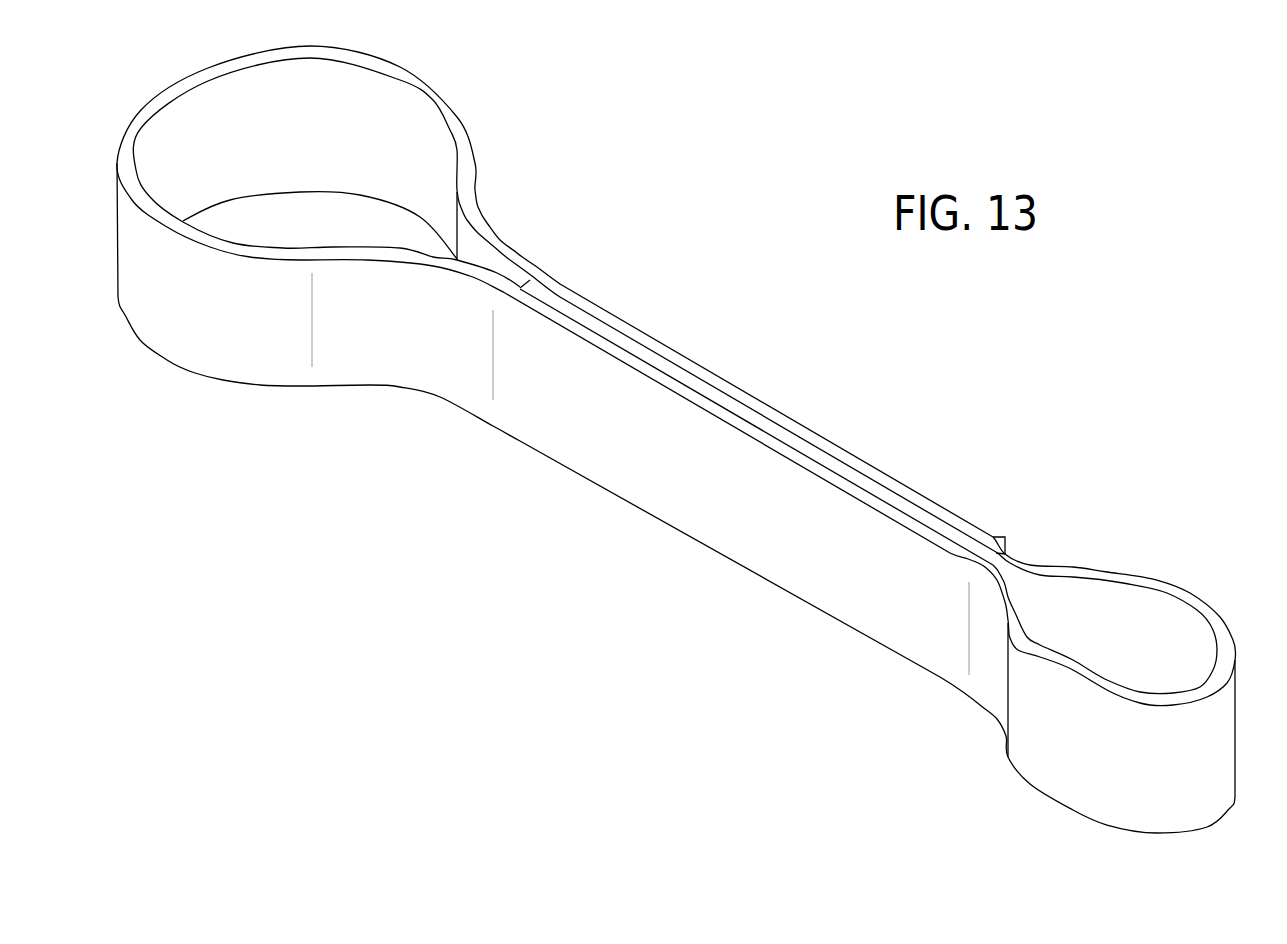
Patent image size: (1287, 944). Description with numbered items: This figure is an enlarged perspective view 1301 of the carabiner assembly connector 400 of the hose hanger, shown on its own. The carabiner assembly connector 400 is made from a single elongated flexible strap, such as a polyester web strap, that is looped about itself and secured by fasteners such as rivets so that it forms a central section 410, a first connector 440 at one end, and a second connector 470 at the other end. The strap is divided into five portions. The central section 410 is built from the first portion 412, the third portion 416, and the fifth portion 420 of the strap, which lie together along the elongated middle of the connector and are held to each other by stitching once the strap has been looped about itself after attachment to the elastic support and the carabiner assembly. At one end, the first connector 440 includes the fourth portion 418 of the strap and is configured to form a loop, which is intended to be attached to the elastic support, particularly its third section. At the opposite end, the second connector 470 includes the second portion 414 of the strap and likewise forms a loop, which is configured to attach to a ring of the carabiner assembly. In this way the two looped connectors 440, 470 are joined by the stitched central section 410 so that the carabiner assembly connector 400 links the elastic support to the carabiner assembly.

The carabiner assembly connector 400 is at (427, 630).
The central section 410 is at (605, 487).
The first portion 412 is at (732, 405).
The second portion 414 is at (1135, 588).
The third portion 416 is at (642, 368).
The fourth portion 418 is at (443, 102).
The fifth portion 420 is at (820, 443).
The first connector 440 is at (225, 382).
The second connector 470 is at (1031, 785).
The enlarged perspective view 1301 is at (1141, 322).